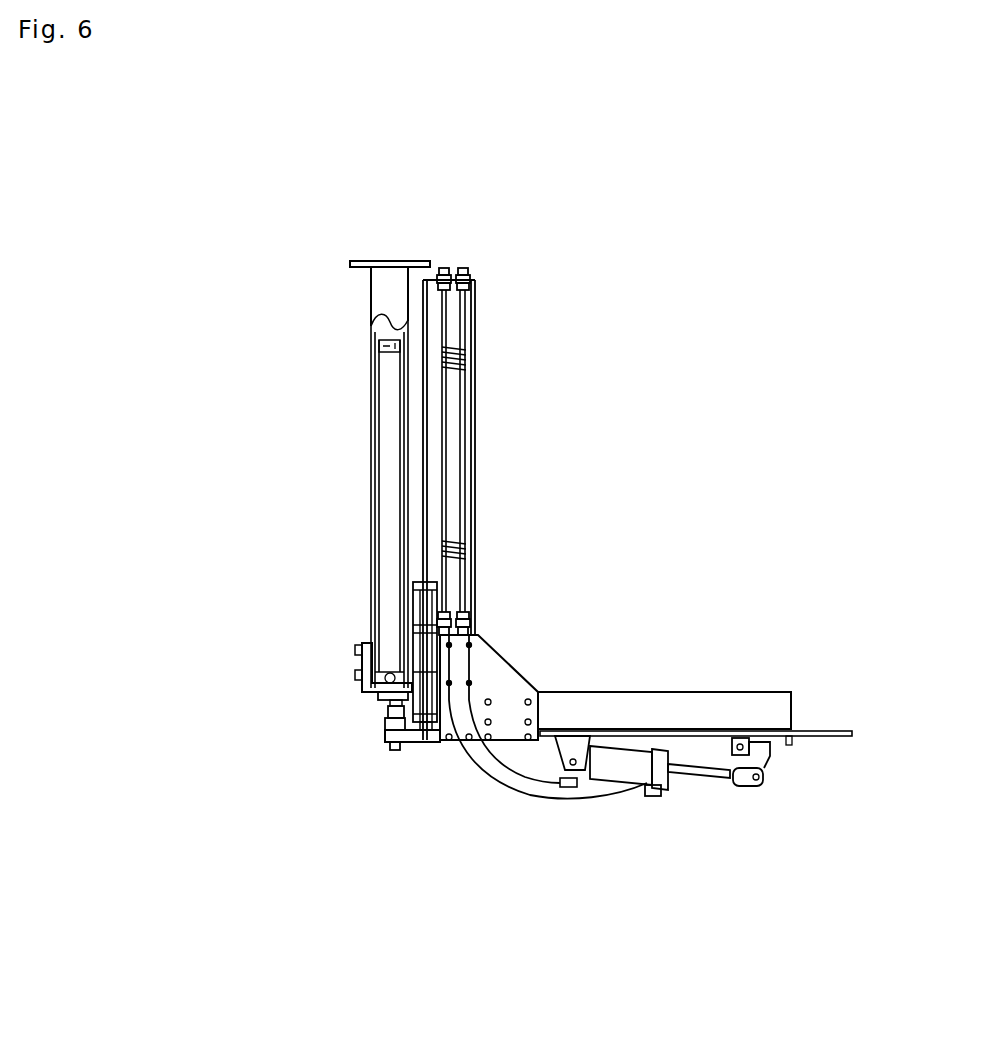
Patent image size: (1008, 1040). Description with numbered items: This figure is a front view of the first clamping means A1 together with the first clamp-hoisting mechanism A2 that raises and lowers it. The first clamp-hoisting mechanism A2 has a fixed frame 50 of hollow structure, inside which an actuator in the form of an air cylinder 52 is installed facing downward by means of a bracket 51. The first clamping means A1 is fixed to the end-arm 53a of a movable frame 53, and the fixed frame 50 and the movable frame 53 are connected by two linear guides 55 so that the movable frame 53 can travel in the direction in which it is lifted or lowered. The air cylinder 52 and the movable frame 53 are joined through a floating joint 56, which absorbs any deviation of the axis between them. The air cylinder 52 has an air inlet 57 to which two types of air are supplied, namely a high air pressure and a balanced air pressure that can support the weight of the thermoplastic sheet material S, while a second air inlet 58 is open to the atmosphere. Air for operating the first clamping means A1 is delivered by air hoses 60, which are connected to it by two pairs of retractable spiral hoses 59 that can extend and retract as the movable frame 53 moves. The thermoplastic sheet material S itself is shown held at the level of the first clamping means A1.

The first clamp-hoisting mechanism A2 is at (331, 209).
The first clamping means A1 is at (669, 819).
The fixed frame 50 is at (388, 302).
The bracket 51 is at (366, 690).
The air cylinder 52 is at (392, 545).
The movable frame 53 is at (475, 533).
The end-arm 53a is at (645, 703).
The linear guides 55 is at (455, 702).
The floating joint 56 is at (383, 737).
The air inlet 57 is at (362, 665).
The air inlet 58 is at (372, 342).
The retractable spiral hoses 59 is at (465, 470).
The air hoses 60 is at (538, 773).
The thermoplastic sheet material S is at (812, 728).